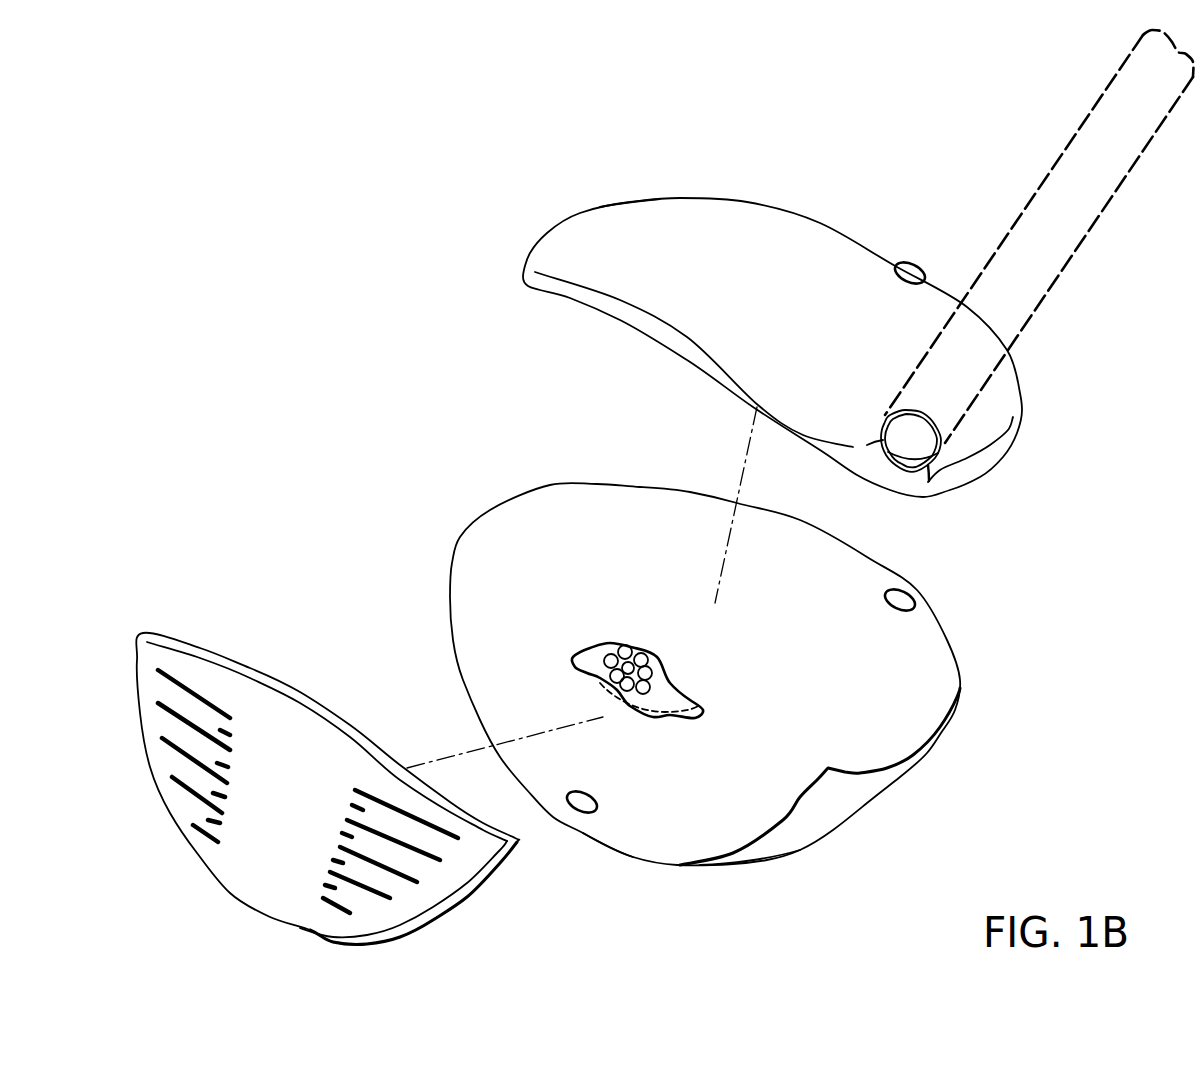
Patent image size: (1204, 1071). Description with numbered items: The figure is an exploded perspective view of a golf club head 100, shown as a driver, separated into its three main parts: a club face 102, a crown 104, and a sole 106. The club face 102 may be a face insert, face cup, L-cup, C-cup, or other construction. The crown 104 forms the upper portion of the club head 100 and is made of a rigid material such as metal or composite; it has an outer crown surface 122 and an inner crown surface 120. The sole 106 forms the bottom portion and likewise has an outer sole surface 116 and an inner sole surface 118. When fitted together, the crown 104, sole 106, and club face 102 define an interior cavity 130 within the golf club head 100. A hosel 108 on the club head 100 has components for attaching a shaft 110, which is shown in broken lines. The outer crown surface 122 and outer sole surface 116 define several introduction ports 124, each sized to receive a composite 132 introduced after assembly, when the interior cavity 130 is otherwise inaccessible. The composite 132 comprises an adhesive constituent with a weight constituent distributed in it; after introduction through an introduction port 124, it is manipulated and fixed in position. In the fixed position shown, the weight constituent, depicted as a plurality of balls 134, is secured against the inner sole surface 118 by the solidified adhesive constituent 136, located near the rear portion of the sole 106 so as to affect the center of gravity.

The golf club head 100 is at (724, 130).
The club face 102 is at (242, 867).
The crown 104 is at (1012, 410).
The sole 106 is at (793, 837).
The hosel 108 is at (950, 467).
The shaft 110 is at (1090, 222).
The outer sole surface 116 is at (747, 853).
The inner sole surface 118 is at (628, 838).
The inner crown surface 120 is at (552, 300).
The outer crown surface 122 is at (627, 225).
The introduction port 124 is at (915, 270).
The interior cavity 130 is at (818, 681).
The composite 132 is at (663, 615).
The balls 134 is at (624, 643).
The solidified adhesive constituent 136 is at (677, 699).